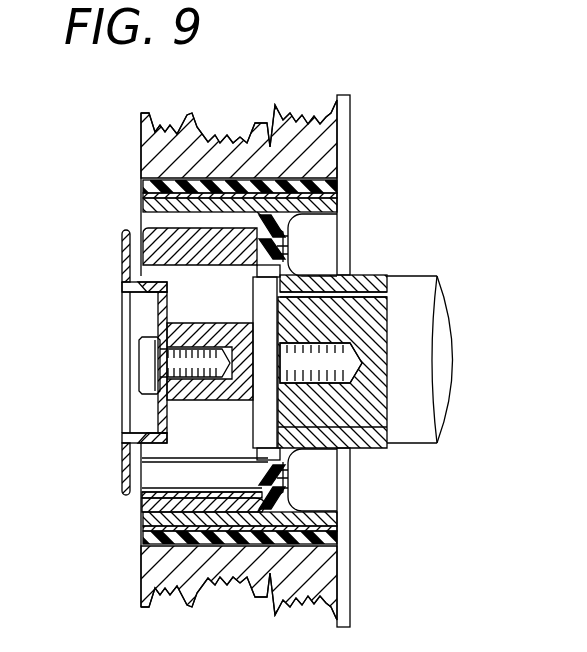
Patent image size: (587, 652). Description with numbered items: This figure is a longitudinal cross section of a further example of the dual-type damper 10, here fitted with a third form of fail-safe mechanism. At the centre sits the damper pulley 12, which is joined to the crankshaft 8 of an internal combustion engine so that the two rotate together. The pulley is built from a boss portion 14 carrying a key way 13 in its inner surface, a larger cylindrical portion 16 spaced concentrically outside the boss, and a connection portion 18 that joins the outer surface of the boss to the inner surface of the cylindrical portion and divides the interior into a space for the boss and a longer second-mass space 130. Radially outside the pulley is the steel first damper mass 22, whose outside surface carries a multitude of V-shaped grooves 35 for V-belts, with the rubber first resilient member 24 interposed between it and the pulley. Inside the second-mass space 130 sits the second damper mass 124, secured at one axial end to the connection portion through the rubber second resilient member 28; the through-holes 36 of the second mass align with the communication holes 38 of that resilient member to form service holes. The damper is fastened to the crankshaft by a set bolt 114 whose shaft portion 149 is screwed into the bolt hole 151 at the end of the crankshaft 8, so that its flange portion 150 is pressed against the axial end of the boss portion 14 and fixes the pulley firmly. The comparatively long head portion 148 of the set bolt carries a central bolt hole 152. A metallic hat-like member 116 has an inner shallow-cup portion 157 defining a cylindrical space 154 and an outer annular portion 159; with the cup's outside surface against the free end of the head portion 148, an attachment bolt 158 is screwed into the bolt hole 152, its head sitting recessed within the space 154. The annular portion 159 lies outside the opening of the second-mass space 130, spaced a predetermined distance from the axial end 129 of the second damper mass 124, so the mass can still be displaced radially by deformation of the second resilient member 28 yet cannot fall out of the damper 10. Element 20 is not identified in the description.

The dual-type damper 10 is at (385, 115).
The V-shaped grooves 35 is at (168, 113).
The first damper mass 22 is at (333, 158).
The bearing 20 is at (142, 187).
The cylindrical portion 16 is at (150, 200).
The first resilient member 24 is at (150, 180).
The connection portion 18 is at (283, 232).
The second resilient member 28 is at (283, 247).
The second damper mass 124 is at (228, 262).
The set bolt 114 is at (188, 318).
The flange portion 150 is at (253, 419).
The damper pulley 12 is at (380, 266).
The key way 13 is at (380, 305).
The boss portion 14 is at (380, 440).
The bolt hole 151 is at (355, 372).
The shaft portion 149 is at (337, 355).
The crankshaft 8 is at (413, 287).
The head portion 148 is at (173, 398).
The second-mass space 130 is at (160, 420).
The bolt hole 152 is at (152, 363).
The attachment bolt 158 is at (125, 358).
The cylindrical space 154 is at (128, 325).
The shallow-cup portion 157 is at (145, 293).
The hat-like member 116 is at (118, 262).
The axial end 129 is at (122, 250).
The outer annular portion 159 is at (124, 468).
The through-holes 36 is at (183, 475).
The communication holes 38 is at (252, 475).